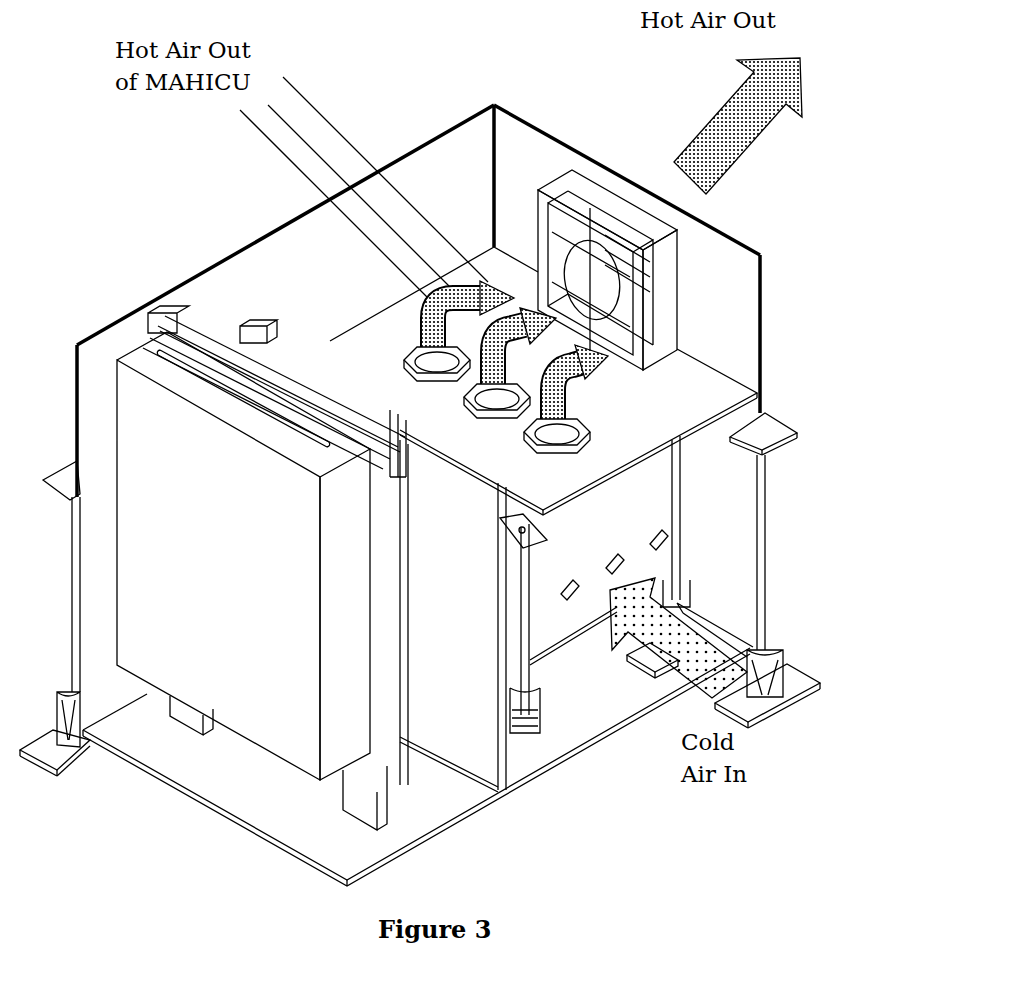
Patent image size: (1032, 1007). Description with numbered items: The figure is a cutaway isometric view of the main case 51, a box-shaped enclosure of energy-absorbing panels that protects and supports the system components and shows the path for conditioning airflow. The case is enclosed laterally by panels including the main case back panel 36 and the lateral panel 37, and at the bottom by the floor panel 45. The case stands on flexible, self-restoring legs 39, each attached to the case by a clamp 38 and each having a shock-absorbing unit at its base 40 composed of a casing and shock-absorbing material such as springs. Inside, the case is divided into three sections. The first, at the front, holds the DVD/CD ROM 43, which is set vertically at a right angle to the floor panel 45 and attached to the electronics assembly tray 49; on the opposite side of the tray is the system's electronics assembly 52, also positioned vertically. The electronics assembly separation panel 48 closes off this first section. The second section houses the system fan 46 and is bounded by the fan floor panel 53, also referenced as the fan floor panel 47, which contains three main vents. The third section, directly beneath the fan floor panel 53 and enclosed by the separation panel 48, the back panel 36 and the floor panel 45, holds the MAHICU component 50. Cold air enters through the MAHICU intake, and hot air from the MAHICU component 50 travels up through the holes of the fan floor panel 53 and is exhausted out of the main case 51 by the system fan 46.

The main case back panel 36 is at (547, 130).
The lateral panel 37 is at (255, 237).
The clamp 38 is at (768, 430).
The self-restoring leg 39 is at (768, 532).
The leg base 40 is at (783, 668).
The DVD/CD ROM 43 is at (258, 532).
The floor panel 45 is at (222, 808).
The system fan 46 is at (612, 193).
The fan floor panel 47 is at (670, 398).
The electronics assembly separation panel 48 is at (440, 598).
The electronics assembly tray 49 is at (157, 306).
The MAHICU component 50 is at (597, 555).
The main case 51 is at (413, 76).
The electronics assembly 52 is at (195, 318).
The fan floor panel 53 is at (407, 343).